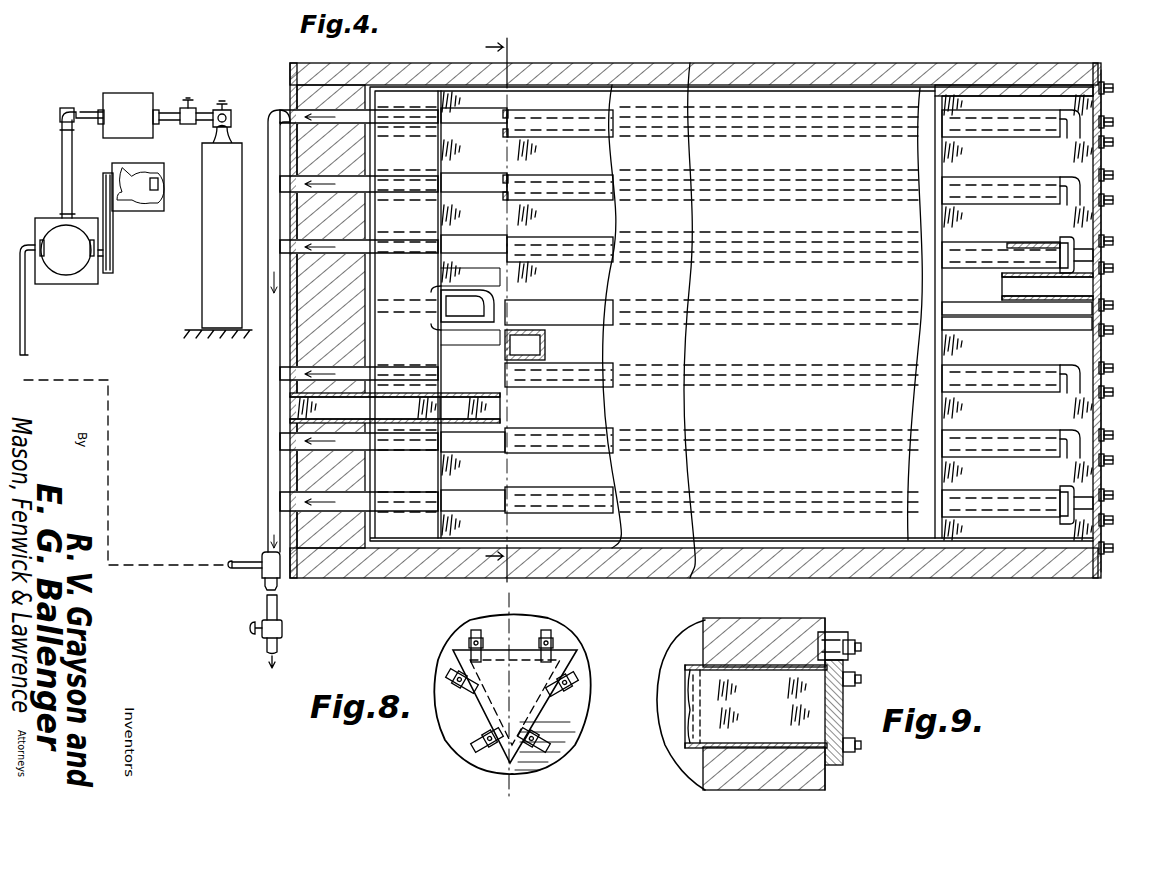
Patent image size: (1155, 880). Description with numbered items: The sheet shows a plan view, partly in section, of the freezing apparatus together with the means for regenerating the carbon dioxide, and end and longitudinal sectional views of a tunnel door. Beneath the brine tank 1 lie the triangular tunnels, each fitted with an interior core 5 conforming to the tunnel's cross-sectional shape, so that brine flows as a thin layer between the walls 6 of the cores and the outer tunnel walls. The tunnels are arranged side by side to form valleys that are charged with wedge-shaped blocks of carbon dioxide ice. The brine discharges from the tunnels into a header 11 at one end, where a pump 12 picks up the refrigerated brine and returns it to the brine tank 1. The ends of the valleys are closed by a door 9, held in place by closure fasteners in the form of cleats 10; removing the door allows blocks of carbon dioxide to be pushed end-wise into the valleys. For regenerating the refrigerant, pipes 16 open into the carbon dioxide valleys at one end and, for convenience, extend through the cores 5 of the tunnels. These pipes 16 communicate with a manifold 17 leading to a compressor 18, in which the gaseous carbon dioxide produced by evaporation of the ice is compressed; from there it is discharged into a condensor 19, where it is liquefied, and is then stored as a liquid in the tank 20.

In FIG. 4, the brine tank 1 is at (663, 65).
In FIG. 8, the brine tank 1 is at (460, 635).
In FIG. 9, the brine tank 1 is at (705, 620).
In FIG. 4, the interior cores 5 is at (950, 580).
In FIG. 4, the walls of the cores 6 is at (616, 262).
In FIG. 9, the walls of the cores 6 is at (672, 668).
In FIG. 4, the door 9 is at (1115, 345).
In FIG. 8, the door 9 is at (480, 712).
In FIG. 9, the door 9 is at (848, 672).
In FIG. 4, the cleats 10 is at (1097, 264).
In FIG. 8, the cleats 10 is at (556, 650).
In FIG. 9, the cleats 10 is at (850, 636).
In FIG. 4, the header 11 is at (376, 284).
In FIG. 4, the pump 12 is at (466, 292).
In FIG. 4, the pipes 16 is at (340, 240).
In FIG. 4, the manifold 17 is at (268, 362).
In FIG. 4, the compressor 18 is at (78, 272).
In FIG. 4, the condensor 19 is at (135, 96).
In FIG. 4, the tank 20 is at (208, 258).